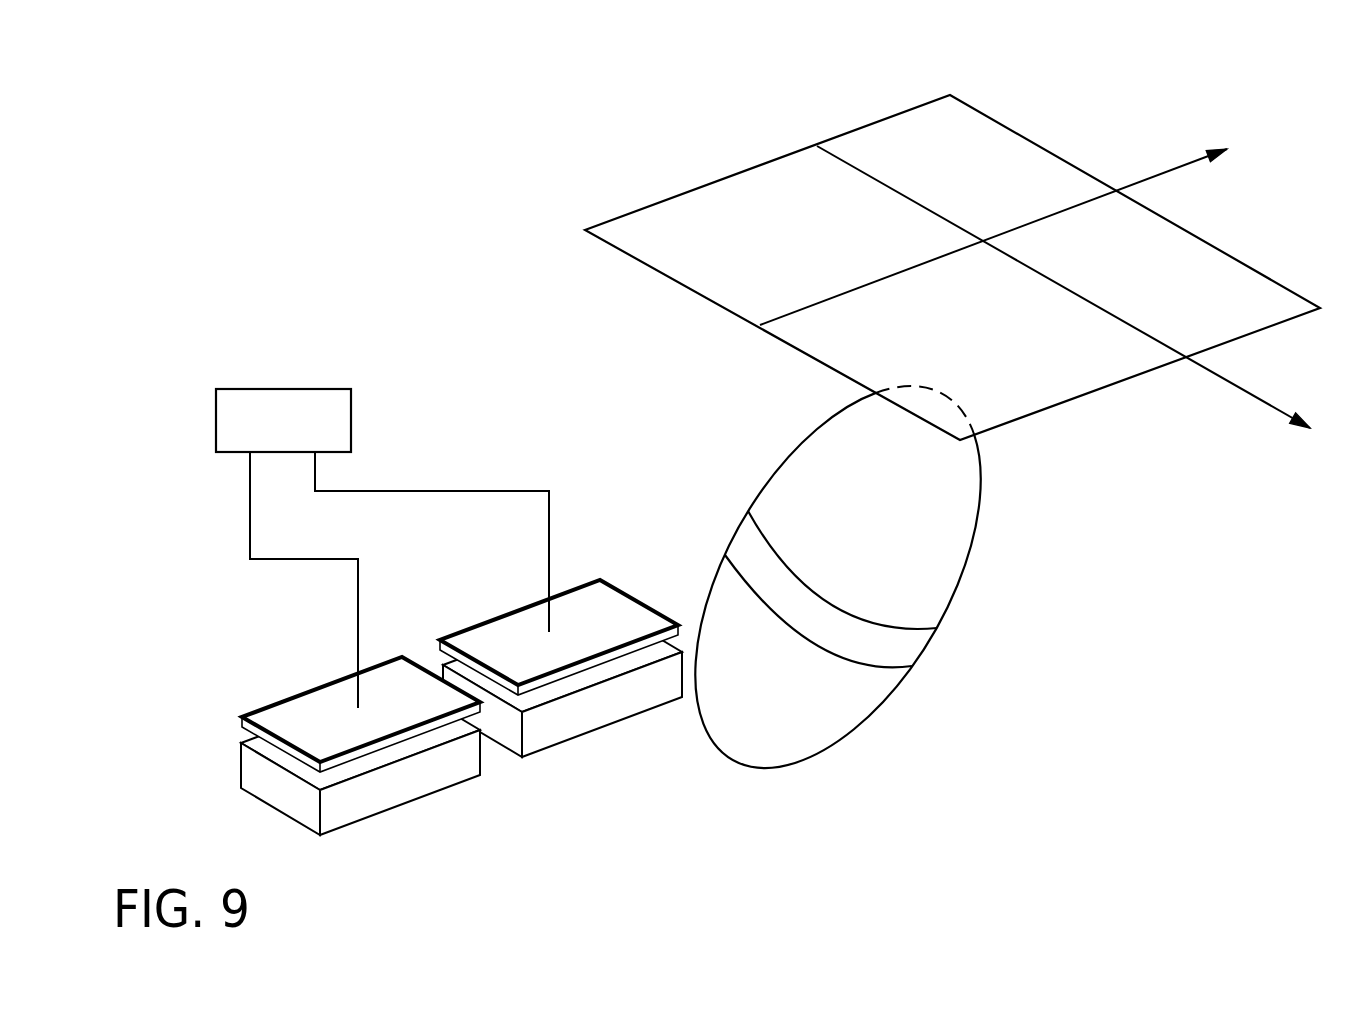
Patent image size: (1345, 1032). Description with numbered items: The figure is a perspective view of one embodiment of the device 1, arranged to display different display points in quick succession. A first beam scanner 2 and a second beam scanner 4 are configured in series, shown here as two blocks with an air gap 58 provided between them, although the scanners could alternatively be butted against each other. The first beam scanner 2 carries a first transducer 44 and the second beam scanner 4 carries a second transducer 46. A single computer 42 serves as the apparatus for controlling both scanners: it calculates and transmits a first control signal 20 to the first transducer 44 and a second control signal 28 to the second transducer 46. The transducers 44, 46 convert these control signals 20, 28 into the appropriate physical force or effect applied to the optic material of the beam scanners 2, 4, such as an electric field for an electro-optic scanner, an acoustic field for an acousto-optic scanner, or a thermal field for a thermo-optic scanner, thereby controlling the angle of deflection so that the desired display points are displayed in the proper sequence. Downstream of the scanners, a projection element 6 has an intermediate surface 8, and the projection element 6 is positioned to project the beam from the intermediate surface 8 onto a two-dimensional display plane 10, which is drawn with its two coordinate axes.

The device 1 is at (515, 363).
The first beam scanner 2 is at (415, 785).
The second beam scanner 4 is at (613, 710).
The projection element 6 is at (902, 685).
The intermediate surface 8 is at (820, 713).
The two-dimensional display plane 10 is at (1042, 149).
The first control signal 20 is at (248, 510).
The second control signal 28 is at (316, 472).
The computer 42 is at (263, 435).
The first transducer 44 is at (300, 688).
The second transducer 46 is at (510, 612).
The air gap 58 is at (487, 755).